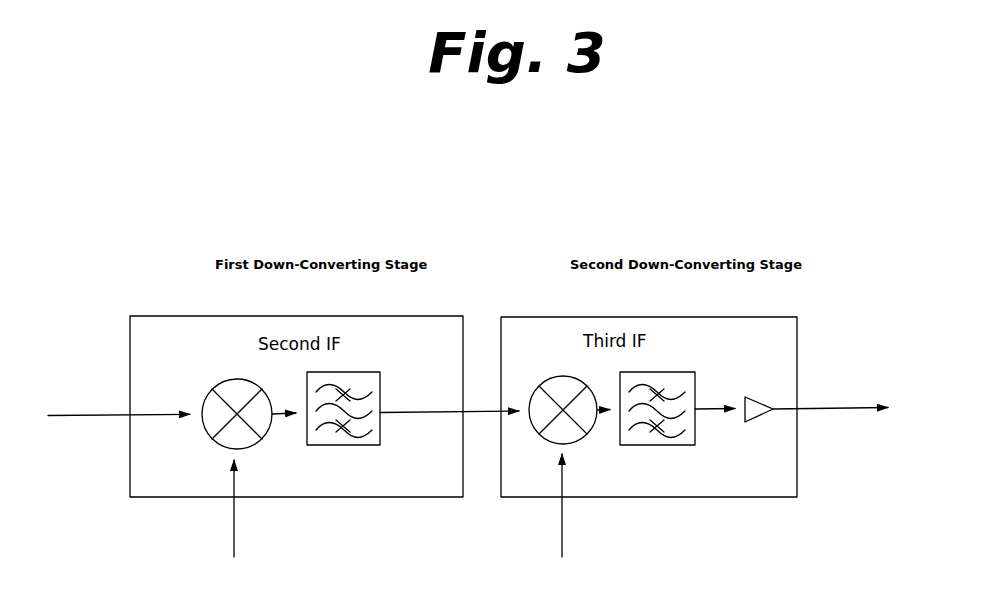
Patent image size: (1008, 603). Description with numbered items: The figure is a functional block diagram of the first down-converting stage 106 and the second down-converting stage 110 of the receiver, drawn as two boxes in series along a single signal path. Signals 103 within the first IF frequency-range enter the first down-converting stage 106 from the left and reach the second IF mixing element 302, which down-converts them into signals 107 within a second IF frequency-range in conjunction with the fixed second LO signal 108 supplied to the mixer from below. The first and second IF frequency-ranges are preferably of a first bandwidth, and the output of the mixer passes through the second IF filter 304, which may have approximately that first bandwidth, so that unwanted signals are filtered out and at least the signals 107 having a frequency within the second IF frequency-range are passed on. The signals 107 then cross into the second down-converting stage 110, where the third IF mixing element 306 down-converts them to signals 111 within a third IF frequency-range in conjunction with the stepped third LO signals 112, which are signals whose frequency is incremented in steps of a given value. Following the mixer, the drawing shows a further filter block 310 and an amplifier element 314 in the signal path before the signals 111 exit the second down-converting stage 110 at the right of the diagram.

The signals of a first intermediate frequency 103 is at (120, 415).
The first down-converting stage 106 is at (272, 316).
The signals within the second IF frequency-range 107 is at (482, 411).
The fixed second LO signal 108 is at (234, 517).
The second down-converting stage 110 is at (501, 317).
The signals within the third IF frequency-range 111 is at (838, 407).
The stepped third LO signals 112 is at (562, 527).
The second IF mixing element 302 is at (217, 393).
The second IF filter 304 is at (380, 398).
The third IF mixing element 306 is at (541, 390).
The second filter 310 is at (660, 445).
The amplifier 314 is at (765, 400).